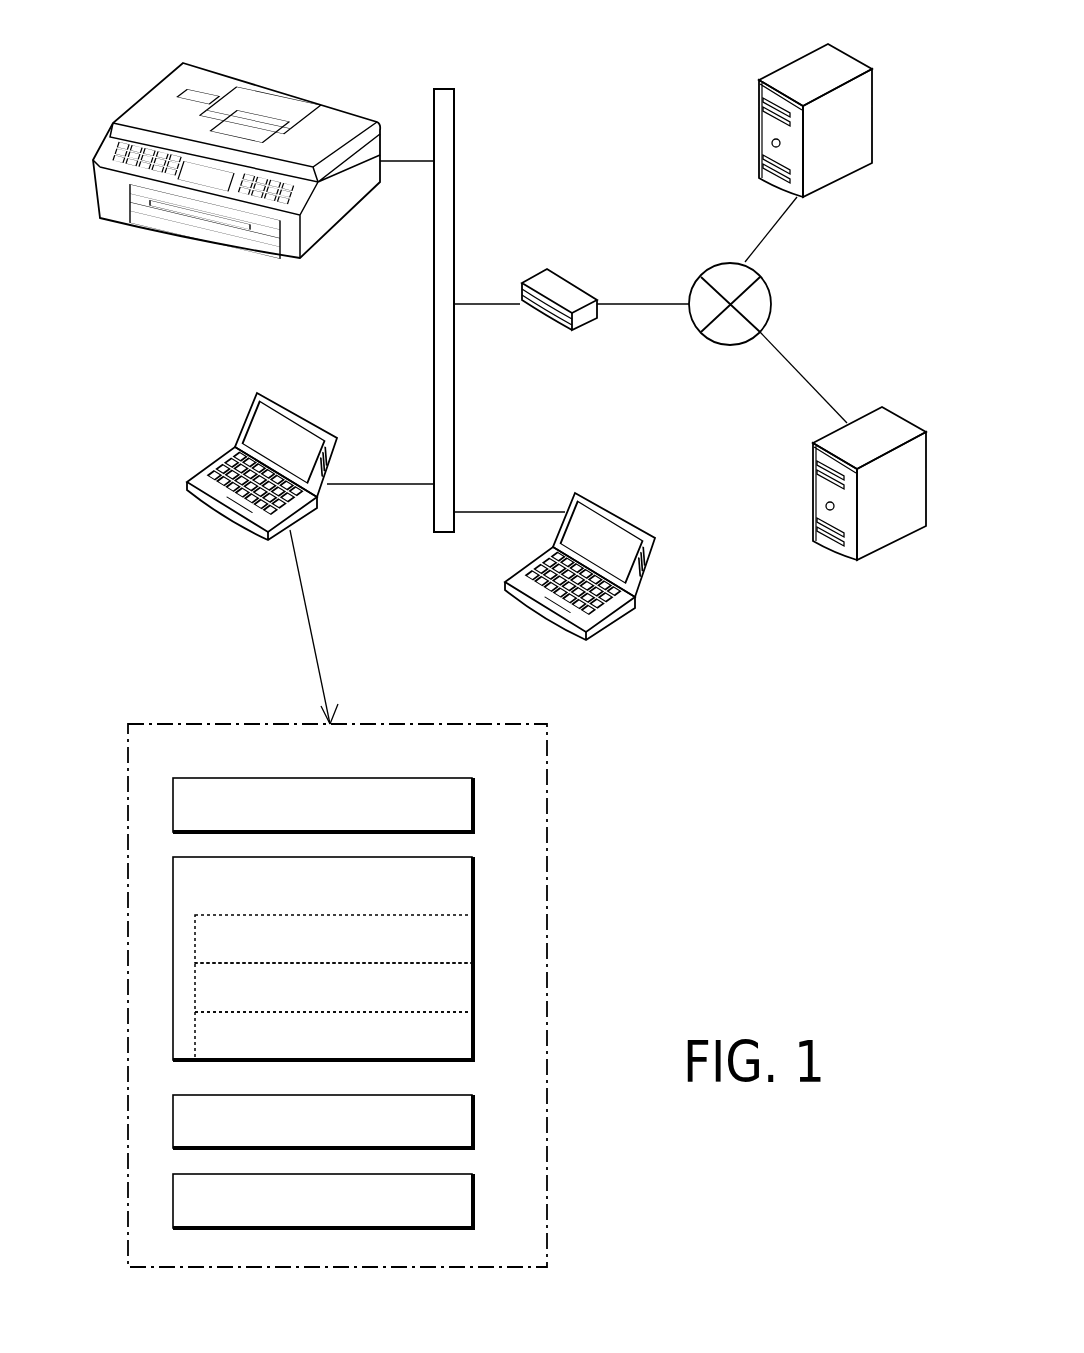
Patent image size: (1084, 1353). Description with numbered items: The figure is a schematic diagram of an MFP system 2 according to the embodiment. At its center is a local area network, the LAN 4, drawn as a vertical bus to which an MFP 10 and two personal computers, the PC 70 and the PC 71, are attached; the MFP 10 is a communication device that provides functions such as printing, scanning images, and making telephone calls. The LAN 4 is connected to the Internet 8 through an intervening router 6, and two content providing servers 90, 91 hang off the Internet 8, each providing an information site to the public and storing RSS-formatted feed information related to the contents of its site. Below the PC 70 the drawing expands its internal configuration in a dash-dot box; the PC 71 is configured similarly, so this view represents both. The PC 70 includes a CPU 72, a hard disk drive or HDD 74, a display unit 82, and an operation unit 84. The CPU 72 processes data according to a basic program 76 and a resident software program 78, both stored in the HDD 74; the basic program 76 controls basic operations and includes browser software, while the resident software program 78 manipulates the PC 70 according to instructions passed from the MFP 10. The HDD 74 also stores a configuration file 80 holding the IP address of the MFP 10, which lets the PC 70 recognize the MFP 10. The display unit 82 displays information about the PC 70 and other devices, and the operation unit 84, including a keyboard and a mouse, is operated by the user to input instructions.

The MFP system 2 is at (597, 48).
The local area network (LAN) 4 is at (454, 122).
The router 6 is at (563, 282).
The Internet 8 is at (771, 298).
The MFP 10 is at (355, 118).
The personal computer (PC) 70 is at (287, 430).
The personal computer (PC) 71 is at (605, 528).
The CPU 72 is at (473, 803).
The hard disk drive (HDD) 74 is at (473, 887).
The basic program 76 is at (474, 940).
The resident software program 78 is at (474, 985).
The configuration file 80 is at (474, 1032).
The display unit 82 is at (473, 1124).
The operation unit 84 is at (473, 1202).
The content providing server 90 is at (758, 119).
The content providing server 91 is at (812, 496).